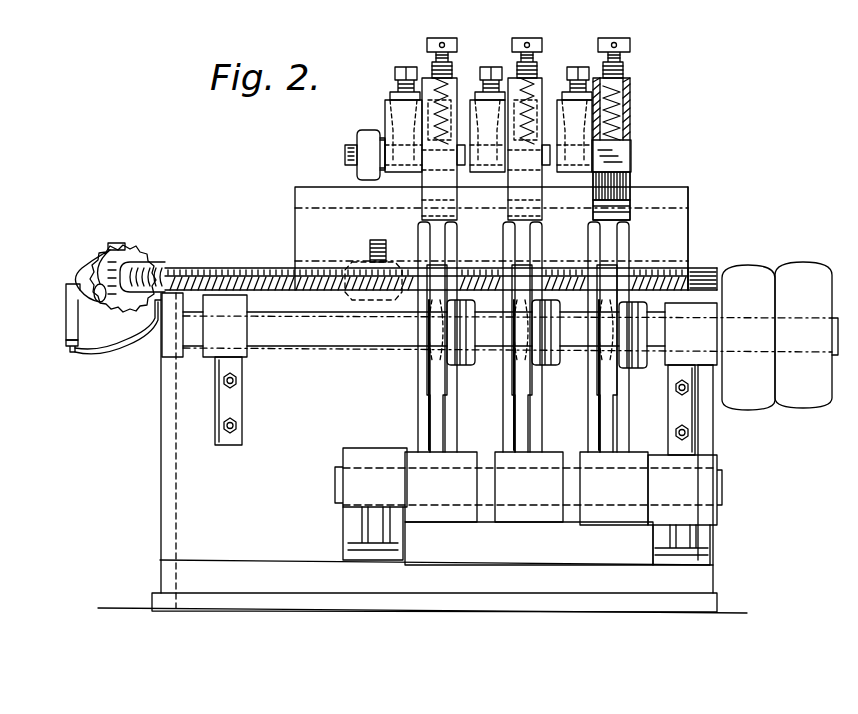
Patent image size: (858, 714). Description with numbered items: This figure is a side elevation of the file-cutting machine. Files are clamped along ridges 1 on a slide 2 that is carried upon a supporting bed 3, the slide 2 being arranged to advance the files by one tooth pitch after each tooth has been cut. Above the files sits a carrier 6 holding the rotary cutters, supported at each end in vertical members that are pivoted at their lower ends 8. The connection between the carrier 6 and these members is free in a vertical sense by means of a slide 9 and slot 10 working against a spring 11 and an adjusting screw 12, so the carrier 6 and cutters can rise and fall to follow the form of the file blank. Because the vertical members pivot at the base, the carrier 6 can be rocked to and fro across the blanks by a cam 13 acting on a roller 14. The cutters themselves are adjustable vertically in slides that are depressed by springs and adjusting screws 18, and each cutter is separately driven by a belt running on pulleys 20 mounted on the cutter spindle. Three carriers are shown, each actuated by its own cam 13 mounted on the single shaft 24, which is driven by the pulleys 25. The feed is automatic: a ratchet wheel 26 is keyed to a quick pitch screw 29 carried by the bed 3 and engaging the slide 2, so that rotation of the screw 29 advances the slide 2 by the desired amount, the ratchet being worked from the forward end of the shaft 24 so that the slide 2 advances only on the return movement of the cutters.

The ridges 1 is at (315, 194).
The slide 2 is at (680, 222).
The supporting bed 3 is at (245, 270).
The carrier 6 is at (385, 100).
The pivot of vertical members 8 is at (337, 485).
The slide 9 is at (632, 158).
The slot 10 is at (633, 188).
The spring 11 is at (462, 151).
The adjusting screw 12 is at (457, 48).
The cam 13 is at (432, 372).
The roller 14 is at (425, 345).
The adjusting screws 18 is at (505, 62).
The pulleys 20 is at (357, 142).
The shaft 24 is at (328, 340).
The pulleys 25 is at (798, 406).
The ratchet wheel 26 is at (120, 245).
The quick pitch screw 29 is at (150, 268).